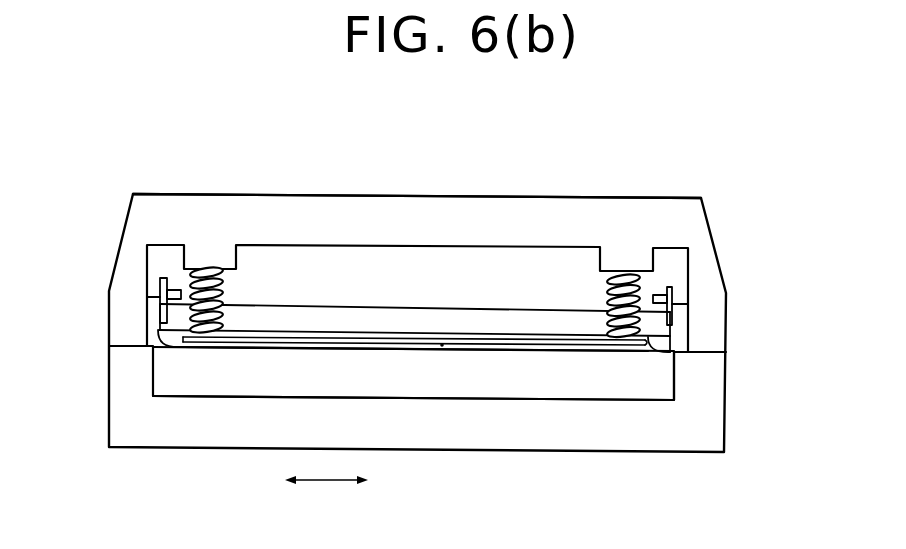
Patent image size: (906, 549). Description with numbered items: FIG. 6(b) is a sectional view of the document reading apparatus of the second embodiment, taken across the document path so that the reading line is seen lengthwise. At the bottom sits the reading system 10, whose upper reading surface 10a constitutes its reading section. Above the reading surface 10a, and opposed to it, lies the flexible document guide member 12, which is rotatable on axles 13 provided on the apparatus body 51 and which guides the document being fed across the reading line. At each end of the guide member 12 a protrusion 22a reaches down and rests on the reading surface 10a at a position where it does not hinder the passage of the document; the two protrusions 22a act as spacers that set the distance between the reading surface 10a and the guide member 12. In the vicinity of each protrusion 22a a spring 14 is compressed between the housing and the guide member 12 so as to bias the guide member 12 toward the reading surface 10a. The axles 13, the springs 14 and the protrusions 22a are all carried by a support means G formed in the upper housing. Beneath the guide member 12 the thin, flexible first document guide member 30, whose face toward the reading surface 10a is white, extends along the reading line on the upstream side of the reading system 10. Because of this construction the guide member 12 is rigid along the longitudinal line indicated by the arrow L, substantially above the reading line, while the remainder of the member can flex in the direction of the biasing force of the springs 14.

The apparatus body 51 is at (335, 176).
The support means G is at (265, 210).
The reading system 10 is at (515, 392).
The reading surface 10a is at (442, 347).
The document guide member 12 is at (490, 322).
The axles 13 is at (153, 288).
The springs 14 is at (207, 268).
The protrusions 22a is at (168, 345).
The first document guide member 30 is at (256, 340).
The longitudinal line L is at (326, 492).